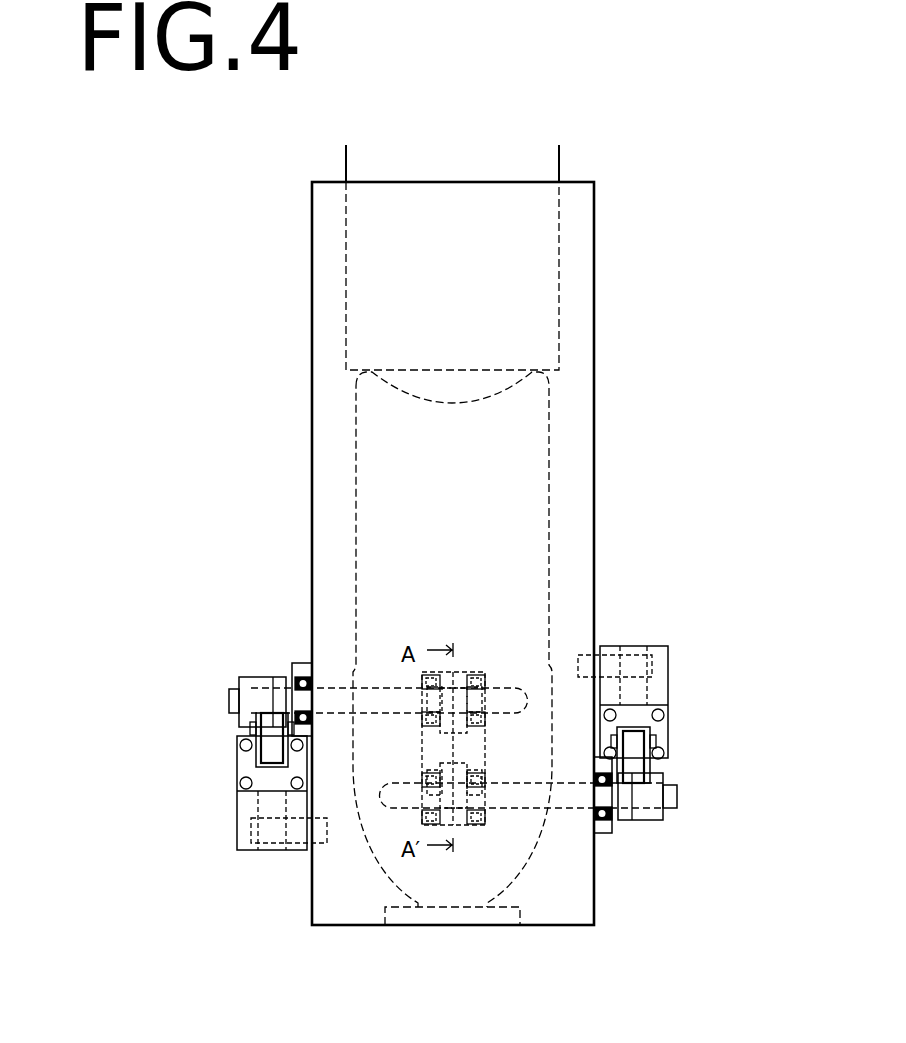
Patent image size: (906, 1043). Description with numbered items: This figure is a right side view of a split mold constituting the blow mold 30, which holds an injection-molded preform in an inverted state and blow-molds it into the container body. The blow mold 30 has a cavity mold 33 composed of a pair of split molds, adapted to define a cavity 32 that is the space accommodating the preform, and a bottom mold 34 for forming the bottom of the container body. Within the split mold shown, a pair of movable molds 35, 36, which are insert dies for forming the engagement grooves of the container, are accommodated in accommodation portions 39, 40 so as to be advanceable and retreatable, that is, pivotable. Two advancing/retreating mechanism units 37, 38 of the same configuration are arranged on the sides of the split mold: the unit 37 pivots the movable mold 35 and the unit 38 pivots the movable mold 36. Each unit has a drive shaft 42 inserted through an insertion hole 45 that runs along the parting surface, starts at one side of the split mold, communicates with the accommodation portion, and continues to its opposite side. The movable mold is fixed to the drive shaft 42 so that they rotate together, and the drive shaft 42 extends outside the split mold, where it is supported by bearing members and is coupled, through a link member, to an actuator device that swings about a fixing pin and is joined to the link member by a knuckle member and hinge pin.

The blow mold 30 is at (675, 211).
The cavity 32 is at (533, 455).
The cavity mold 33 is at (555, 163).
The bottom mold 34 is at (499, 243).
The movable mold 35 is at (520, 680).
The movable mold 36 is at (446, 858).
The advancing/retreating mechanism unit 37 is at (249, 762).
The advancing/retreating mechanism unit 38 is at (660, 731).
The accommodation portion 39 is at (520, 680).
The accommodation portion 40 is at (446, 858).
The drive shaft 42 is at (453, 766).
The insertion hole 45 is at (388, 693).